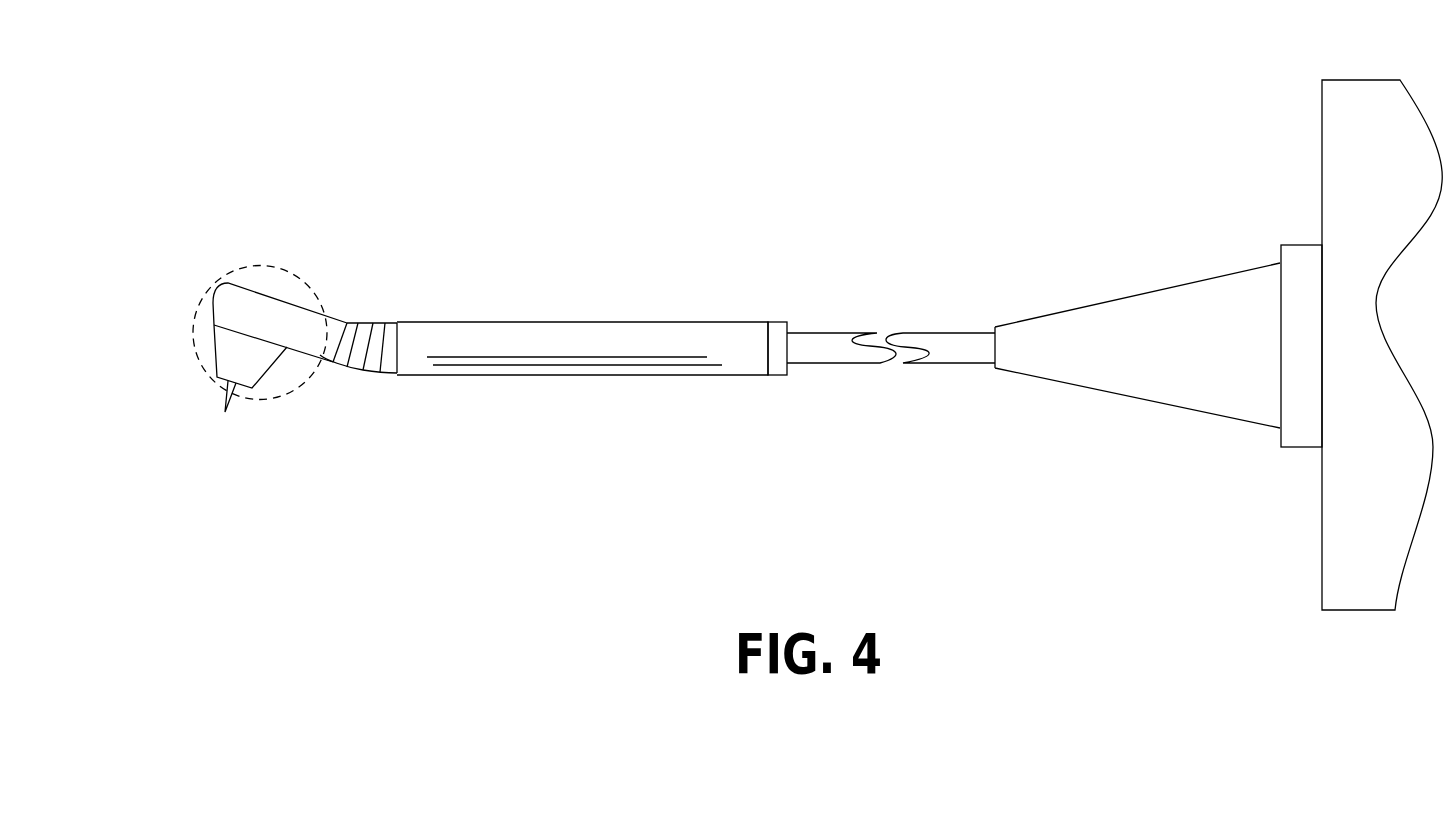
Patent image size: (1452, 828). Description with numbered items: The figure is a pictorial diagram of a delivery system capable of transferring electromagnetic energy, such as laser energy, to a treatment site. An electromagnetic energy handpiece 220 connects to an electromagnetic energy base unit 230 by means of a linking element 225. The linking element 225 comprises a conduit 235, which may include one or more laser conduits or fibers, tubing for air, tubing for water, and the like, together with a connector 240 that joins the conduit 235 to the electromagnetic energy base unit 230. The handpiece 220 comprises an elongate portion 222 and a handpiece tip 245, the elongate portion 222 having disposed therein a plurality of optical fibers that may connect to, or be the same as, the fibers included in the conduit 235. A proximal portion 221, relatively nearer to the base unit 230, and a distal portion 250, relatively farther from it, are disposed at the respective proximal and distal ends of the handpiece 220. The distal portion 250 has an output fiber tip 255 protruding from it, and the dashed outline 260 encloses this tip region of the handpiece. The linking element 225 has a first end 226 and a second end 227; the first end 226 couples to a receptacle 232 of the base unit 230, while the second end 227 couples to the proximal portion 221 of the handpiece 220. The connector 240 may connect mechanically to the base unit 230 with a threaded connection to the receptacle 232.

The electromagnetic energy handpiece 220 is at (550, 437).
The proximal portion 221 is at (782, 322).
The elongate portion 222 is at (542, 322).
The linking element 225 is at (1277, 433).
The first end 226 is at (1278, 255).
The second end 227 is at (793, 333).
The electromagnetic energy base unit 230 is at (1382, 345).
The receptacle 232 is at (1303, 245).
The conduit 235 is at (948, 333).
The connector 240 is at (1195, 283).
The handpiece tip 245 is at (350, 433).
The distal portion 250 is at (213, 347).
The output fiber tip 255 is at (224, 411).
The tip region 260 is at (317, 291).